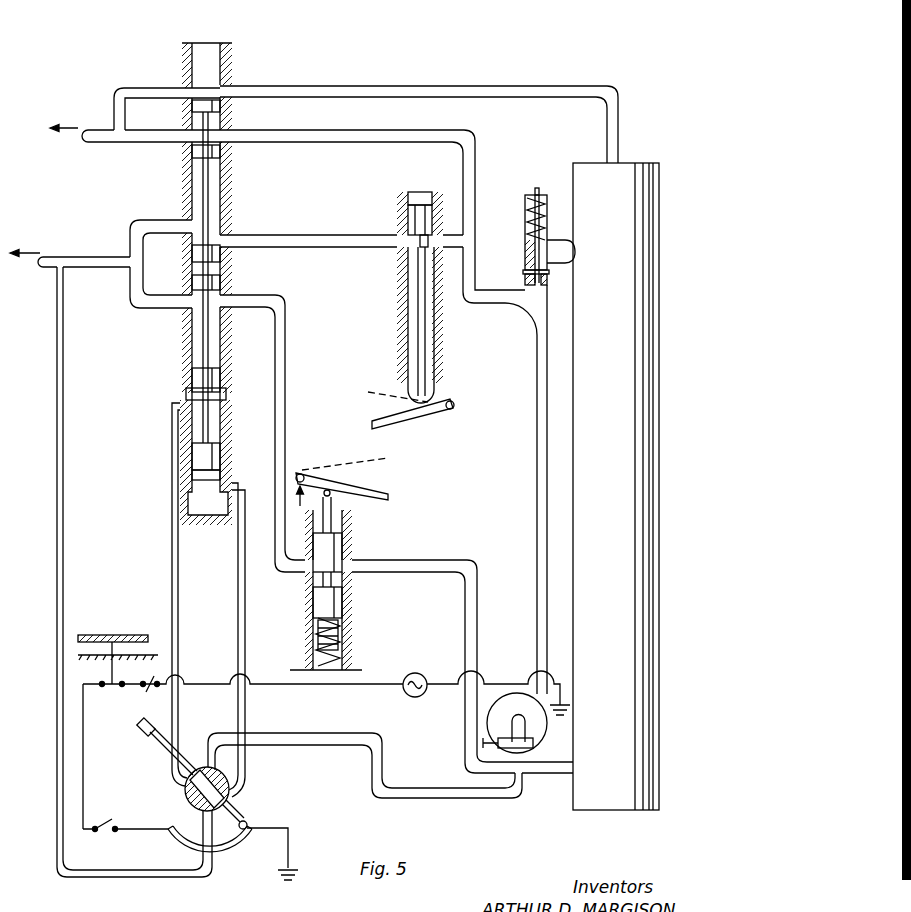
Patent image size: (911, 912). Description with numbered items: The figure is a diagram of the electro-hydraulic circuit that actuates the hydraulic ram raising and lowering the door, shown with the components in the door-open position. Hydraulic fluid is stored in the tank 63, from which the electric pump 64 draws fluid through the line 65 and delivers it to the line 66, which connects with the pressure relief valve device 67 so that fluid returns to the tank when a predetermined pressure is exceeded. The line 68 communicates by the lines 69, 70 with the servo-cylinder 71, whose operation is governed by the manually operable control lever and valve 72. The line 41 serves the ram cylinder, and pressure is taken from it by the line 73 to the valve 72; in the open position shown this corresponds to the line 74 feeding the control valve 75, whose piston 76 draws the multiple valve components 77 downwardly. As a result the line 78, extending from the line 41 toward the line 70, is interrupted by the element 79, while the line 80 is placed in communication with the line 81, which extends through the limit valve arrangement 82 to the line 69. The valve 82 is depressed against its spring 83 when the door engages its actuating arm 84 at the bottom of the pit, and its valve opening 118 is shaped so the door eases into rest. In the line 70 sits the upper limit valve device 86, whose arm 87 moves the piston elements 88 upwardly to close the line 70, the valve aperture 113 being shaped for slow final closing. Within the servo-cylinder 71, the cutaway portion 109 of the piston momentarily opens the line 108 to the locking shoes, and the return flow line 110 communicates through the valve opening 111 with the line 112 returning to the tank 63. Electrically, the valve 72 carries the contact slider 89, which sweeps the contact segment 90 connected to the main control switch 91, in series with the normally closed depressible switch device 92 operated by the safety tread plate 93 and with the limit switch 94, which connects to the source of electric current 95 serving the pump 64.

The line 41 is at (48, 268).
The tank 63 is at (630, 163).
The electric pump 64 is at (517, 694).
The line 65 is at (548, 775).
The line 66 is at (537, 430).
The pressure relief valve device 67 is at (525, 223).
The line 68 is at (512, 303).
The line 69 is at (470, 275).
The line 70 is at (350, 235).
The servo-cylinder 71 is at (232, 196).
The manually operable control lever and valve 72 is at (233, 796).
The line 73 is at (62, 525).
The line 74 is at (172, 572).
The control valve 75 is at (232, 433).
The piston 76 is at (221, 455).
The multiple valve components 77 is at (232, 294).
The line 78 is at (160, 240).
The element 79 is at (200, 200).
The line 80 is at (161, 308).
The line 81 is at (285, 337).
The limit valve arrangement 82 is at (352, 588).
The spring 83 is at (345, 660).
The actuating arm 84 is at (380, 492).
The upper limit valve device 86 is at (397, 228).
The arm 87 is at (372, 415).
The piston elements 88 is at (408, 287).
The electric contact slider 89 is at (248, 823).
The contact segment 90 is at (190, 845).
The main control switch 91 is at (100, 822).
The normally closed depressible switch device 92 is at (119, 690).
The safety tread plate 93 is at (104, 635).
The electric switch 94 is at (159, 690).
The source of electric current 95 is at (404, 697).
The line 108 is at (151, 143).
The cutaway portion 109 is at (222, 152).
The return flow line 110 is at (140, 88).
The valve opening 111 is at (236, 88).
The line 112 is at (376, 86).
The valve aperture 113 is at (430, 238).
The valve opening 118 is at (313, 582).